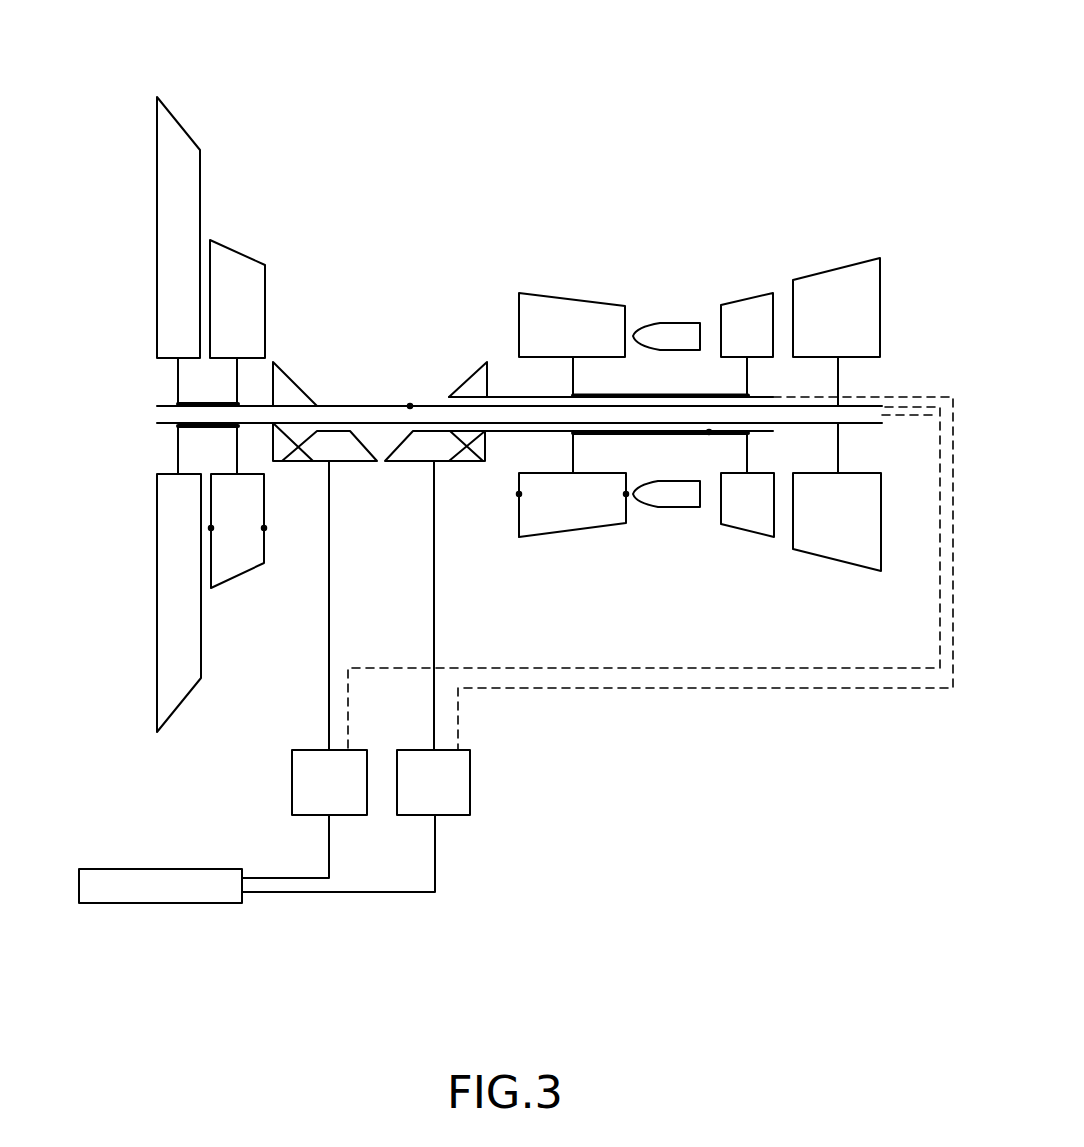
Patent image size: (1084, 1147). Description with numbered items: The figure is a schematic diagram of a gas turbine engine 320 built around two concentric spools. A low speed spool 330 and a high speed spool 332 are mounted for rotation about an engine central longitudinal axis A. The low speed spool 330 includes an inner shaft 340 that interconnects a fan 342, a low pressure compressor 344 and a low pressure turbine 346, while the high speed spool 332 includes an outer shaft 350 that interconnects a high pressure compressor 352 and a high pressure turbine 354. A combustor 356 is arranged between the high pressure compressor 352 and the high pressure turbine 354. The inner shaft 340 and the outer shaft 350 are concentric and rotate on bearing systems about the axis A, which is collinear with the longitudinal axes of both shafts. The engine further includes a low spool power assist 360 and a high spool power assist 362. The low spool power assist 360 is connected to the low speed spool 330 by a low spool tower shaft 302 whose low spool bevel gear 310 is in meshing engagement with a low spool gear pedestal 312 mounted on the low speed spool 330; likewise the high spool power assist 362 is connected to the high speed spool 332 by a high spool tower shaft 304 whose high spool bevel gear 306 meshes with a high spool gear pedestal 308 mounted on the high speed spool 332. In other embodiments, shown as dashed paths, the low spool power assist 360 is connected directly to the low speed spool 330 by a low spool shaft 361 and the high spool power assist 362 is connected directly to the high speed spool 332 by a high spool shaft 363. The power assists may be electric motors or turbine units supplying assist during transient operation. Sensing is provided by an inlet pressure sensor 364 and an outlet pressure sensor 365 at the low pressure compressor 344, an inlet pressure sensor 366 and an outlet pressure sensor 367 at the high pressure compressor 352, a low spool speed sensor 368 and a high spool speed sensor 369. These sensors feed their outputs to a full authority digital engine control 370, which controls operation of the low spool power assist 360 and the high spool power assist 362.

The gas turbine engine 320 is at (130, 70).
The fan 342 is at (190, 172).
The low pressure compressor 344 is at (240, 266).
The low spool gear pedestal 312 is at (283, 380).
The low spool bevel gear 310 is at (298, 463).
The high spool bevel gear 306 is at (405, 463).
The high spool gear pedestal 308 is at (470, 385).
The low speed spool 330 is at (342, 404).
The inner shaft 340 is at (387, 405).
The low spool speed sensor 368 is at (410, 406).
The high speed spool 332 is at (505, 397).
The outer shaft 350 is at (522, 397).
The high pressure compressor 352 is at (548, 305).
The combustor 356 is at (664, 330).
The high pressure turbine 354 is at (741, 312).
The low pressure turbine 346 is at (843, 280).
The engine central longitudinal axis A is at (908, 417).
The low spool tower shaft 302 is at (329, 525).
The high spool tower shaft 304 is at (434, 588).
The low spool power assist 360 is at (347, 799).
The high spool power assist 362 is at (451, 799).
The low spool shaft 361 is at (692, 666).
The high spool shaft 363 is at (712, 690).
The inlet pressure sensor 364 is at (211, 528).
The outlet pressure sensor 365 is at (264, 528).
The inlet pressure sensor 366 is at (519, 494).
The outlet pressure sensor 367 is at (626, 494).
The high spool speed sensor 369 is at (709, 432).
The full authority digital engine control (FADEC) 370 is at (190, 903).